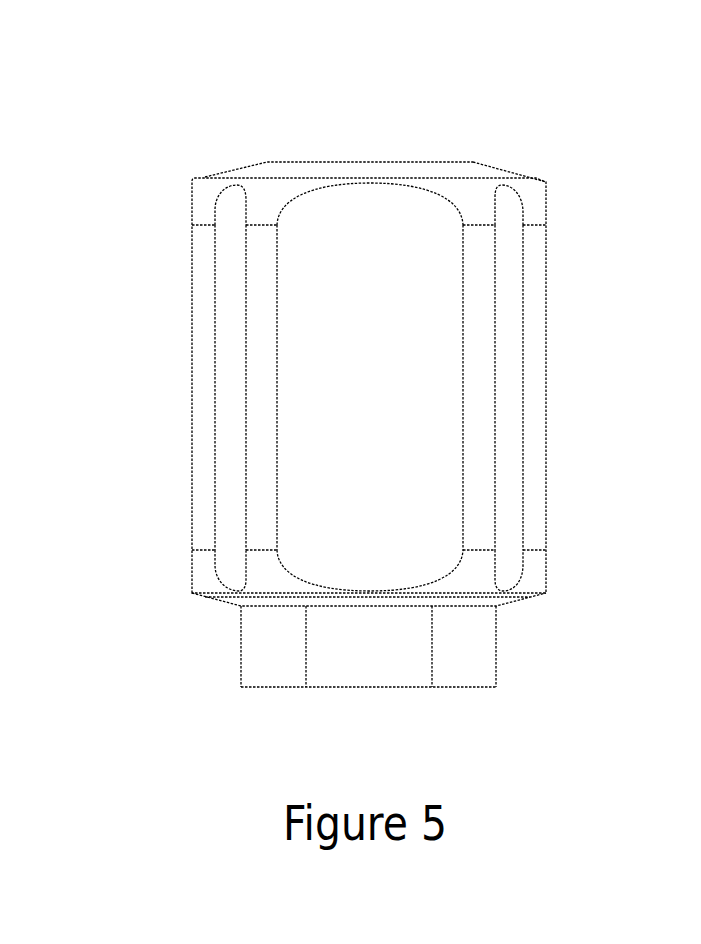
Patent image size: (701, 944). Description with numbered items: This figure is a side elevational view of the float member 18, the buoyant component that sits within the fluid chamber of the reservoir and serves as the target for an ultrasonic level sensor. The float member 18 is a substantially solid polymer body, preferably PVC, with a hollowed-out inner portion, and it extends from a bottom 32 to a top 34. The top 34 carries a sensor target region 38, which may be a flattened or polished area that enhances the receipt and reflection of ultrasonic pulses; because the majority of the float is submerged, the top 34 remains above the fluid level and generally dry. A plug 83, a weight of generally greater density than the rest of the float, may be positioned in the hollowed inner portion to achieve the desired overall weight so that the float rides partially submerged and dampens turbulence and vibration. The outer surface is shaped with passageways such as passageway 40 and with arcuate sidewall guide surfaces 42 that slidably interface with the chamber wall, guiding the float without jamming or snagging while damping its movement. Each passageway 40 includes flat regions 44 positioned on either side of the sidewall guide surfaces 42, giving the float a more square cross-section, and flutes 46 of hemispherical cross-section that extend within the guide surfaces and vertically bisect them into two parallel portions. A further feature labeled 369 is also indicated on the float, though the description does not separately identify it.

The float member 18 is at (580, 318).
The spout body 369 is at (180, 237).
The sensor target region 38 is at (323, 162).
The top 34 is at (503, 158).
The passageway 40 is at (367, 200).
The flat region 44 is at (413, 247).
The flute 46 is at (502, 477).
The sidewall guide surface 42 is at (530, 537).
The bottom 32 is at (530, 628).
The plug 83 is at (478, 690).